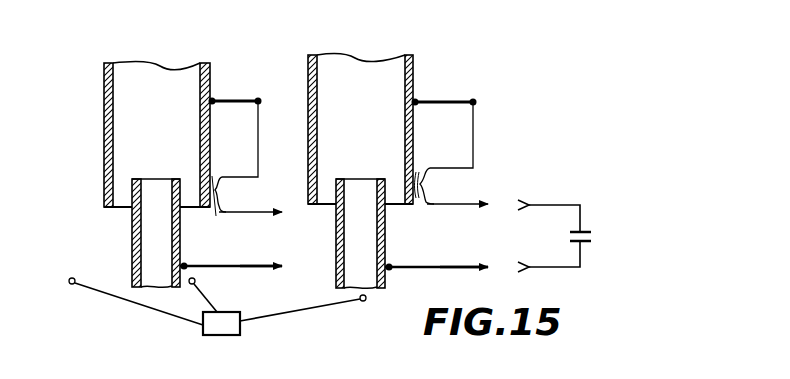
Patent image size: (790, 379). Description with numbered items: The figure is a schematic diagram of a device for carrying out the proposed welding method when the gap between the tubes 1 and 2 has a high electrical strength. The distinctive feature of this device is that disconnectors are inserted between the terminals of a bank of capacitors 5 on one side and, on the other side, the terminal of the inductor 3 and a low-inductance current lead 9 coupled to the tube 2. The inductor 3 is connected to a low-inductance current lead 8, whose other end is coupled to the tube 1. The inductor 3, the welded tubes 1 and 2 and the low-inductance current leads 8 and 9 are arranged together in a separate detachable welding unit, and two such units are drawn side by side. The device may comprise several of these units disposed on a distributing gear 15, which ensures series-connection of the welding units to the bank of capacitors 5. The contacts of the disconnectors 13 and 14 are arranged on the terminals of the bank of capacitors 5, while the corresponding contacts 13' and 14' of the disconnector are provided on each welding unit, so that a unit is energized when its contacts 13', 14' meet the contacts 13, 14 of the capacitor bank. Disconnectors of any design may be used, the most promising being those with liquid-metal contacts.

The tube 1 is at (104, 99).
The tube 2 is at (132, 235).
The low-inductance current lead 8 is at (240, 101).
The inductor 3 is at (331, 192).
The disconnector contact 13' is at (363, 194).
The low-inductance current lead 9 is at (223, 266).
The disconnector contact 14' is at (373, 252).
The distributing gear 15 is at (239, 304).
The disconnector contact 13 is at (546, 204).
The disconnector contact 14 is at (546, 255).
The bank of capacitors 5 is at (570, 237).